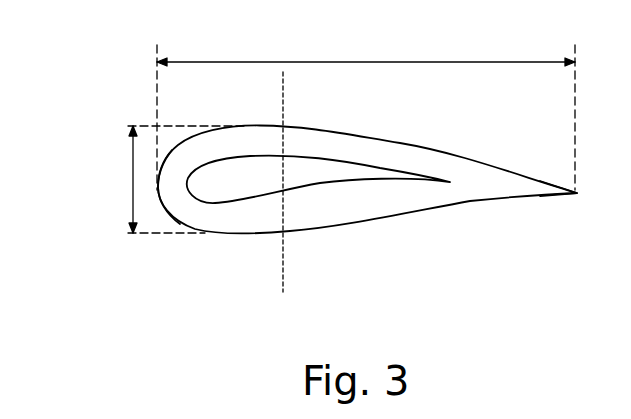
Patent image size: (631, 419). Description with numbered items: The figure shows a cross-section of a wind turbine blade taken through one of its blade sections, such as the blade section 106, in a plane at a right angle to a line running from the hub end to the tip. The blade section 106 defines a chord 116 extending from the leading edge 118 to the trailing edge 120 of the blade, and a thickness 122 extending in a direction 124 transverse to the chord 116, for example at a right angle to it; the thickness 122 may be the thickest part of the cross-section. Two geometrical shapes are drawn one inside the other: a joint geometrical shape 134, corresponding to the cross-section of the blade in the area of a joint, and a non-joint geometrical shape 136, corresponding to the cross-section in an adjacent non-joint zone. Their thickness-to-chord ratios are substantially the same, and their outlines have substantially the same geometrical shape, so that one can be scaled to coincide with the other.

The blade section 106 is at (544, 418).
The chord 116 is at (503, 62).
The leading edge 118 is at (157, 193).
The trailing edge 120 is at (580, 194).
The thickness 122 is at (132, 184).
The direction 124 is at (284, 260).
The joint geometrical shape 134 is at (390, 133).
The non-joint geometrical shape 136 is at (388, 180).